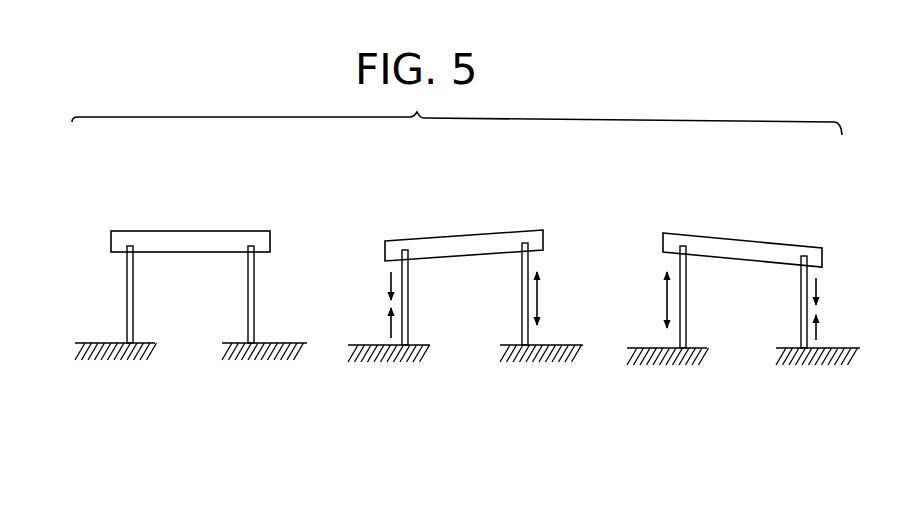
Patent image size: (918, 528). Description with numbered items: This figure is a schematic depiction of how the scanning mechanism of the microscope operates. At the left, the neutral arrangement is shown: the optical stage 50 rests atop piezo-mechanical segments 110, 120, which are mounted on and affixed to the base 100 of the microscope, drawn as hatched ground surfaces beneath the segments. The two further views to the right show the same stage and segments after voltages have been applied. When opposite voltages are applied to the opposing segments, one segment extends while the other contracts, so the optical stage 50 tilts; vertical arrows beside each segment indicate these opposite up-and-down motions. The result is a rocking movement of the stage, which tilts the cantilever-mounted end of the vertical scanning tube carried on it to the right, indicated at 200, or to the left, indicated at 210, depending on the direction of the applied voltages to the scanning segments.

The optical stage 50 is at (202, 216).
The piezo-mechanical segment 110 is at (127, 293).
The piezo-mechanical segment 120 is at (254, 296).
The base 100 is at (110, 368).
The rocking to the right 200 is at (456, 376).
The rocking to the left 210 is at (748, 378).